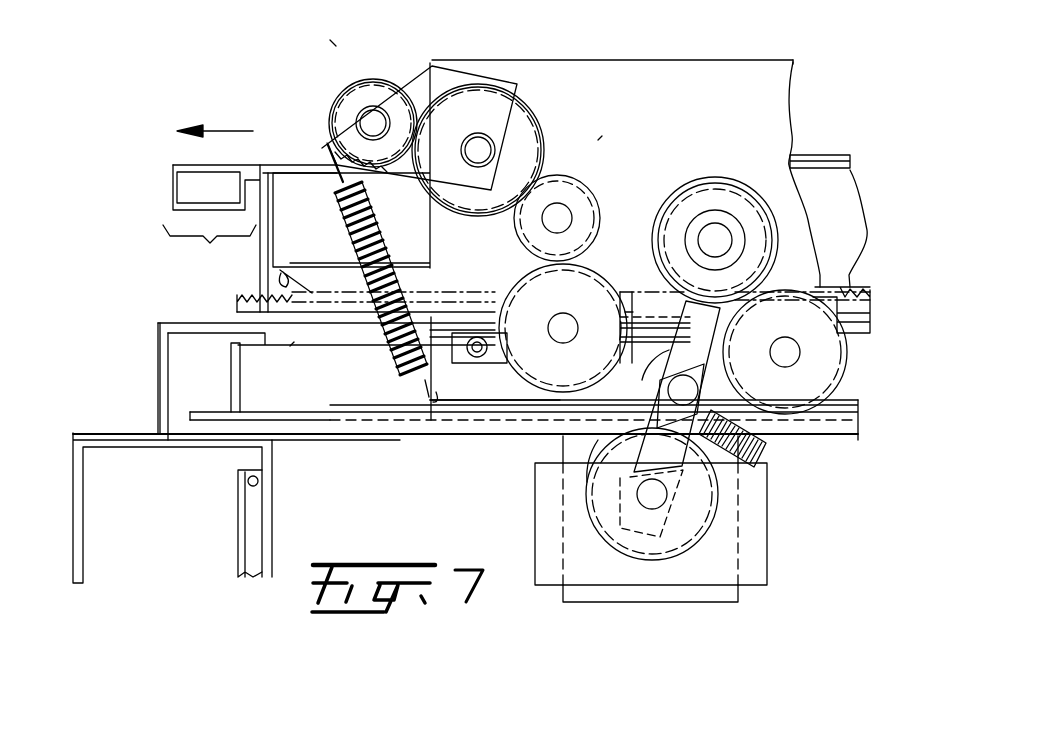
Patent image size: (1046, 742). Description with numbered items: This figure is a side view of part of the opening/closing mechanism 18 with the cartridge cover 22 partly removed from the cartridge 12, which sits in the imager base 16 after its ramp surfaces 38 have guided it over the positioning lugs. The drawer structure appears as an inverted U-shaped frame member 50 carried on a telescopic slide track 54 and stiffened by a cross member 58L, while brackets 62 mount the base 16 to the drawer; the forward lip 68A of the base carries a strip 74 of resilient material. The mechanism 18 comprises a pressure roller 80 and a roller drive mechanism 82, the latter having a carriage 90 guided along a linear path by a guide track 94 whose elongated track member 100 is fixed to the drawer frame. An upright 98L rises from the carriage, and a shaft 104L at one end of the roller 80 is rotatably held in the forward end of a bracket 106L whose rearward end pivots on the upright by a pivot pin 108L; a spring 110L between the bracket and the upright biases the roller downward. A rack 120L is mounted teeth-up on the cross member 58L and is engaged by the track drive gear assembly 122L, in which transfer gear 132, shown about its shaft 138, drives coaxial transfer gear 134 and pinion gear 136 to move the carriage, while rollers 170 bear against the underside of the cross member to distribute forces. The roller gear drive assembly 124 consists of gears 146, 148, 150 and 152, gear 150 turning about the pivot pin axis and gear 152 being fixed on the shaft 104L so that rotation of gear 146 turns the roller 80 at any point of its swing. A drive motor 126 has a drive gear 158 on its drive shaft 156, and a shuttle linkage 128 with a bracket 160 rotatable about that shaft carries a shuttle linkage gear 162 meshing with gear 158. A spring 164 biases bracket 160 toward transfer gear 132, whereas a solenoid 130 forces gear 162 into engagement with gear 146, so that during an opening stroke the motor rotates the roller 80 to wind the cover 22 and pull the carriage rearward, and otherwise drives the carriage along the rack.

The cartridge 12 is at (276, 162).
The imager base 16 is at (294, 343).
The opening/closing mechanism 18 is at (334, 64).
The cartridge cover 22 is at (366, 80).
The ramp surfaces 38 is at (288, 272).
The frame member 50 is at (84, 547).
The telescopic slide track 54 is at (238, 550).
The cross member 58L is at (158, 375).
The brackets 62 is at (231, 378).
The forward lip 68A is at (209, 245).
The strip of resilient material 74 is at (175, 197).
The pressure roller 80 is at (333, 92).
The roller drive mechanism 82 is at (486, 75).
The carriage 90 is at (622, 60).
The guide track 94 is at (390, 440).
The carriage upright 98L is at (703, 66).
The track member 100 is at (350, 437).
The shaft 104L is at (375, 116).
The bracket 106L is at (486, 36).
The pivot pin 108L is at (478, 145).
The spring 110L is at (392, 360).
The rack 120L is at (236, 300).
The track drive gear assembly 122L is at (792, 203).
The roller gear drive assembly 124 is at (592, 143).
The drive motor 126 is at (723, 592).
The shuttle linkage 128 is at (647, 452).
The solenoid 130 is at (478, 436).
The transfer gear 132 is at (848, 367).
The transfer gear 134 is at (753, 203).
The pinion gear 136 is at (710, 198).
The idler shaft 138 is at (788, 345).
The roller gear 146 is at (598, 283).
The gear 148 is at (580, 195).
The gear 150 is at (522, 125).
The gear 152 is at (370, 172).
The drive shaft 156 is at (663, 505).
The drive gear 158 is at (597, 445).
The bracket 160 is at (712, 440).
The shuttle linkage gear 162 is at (716, 378).
The spring 164 is at (760, 448).
The rollers 170 is at (476, 360).